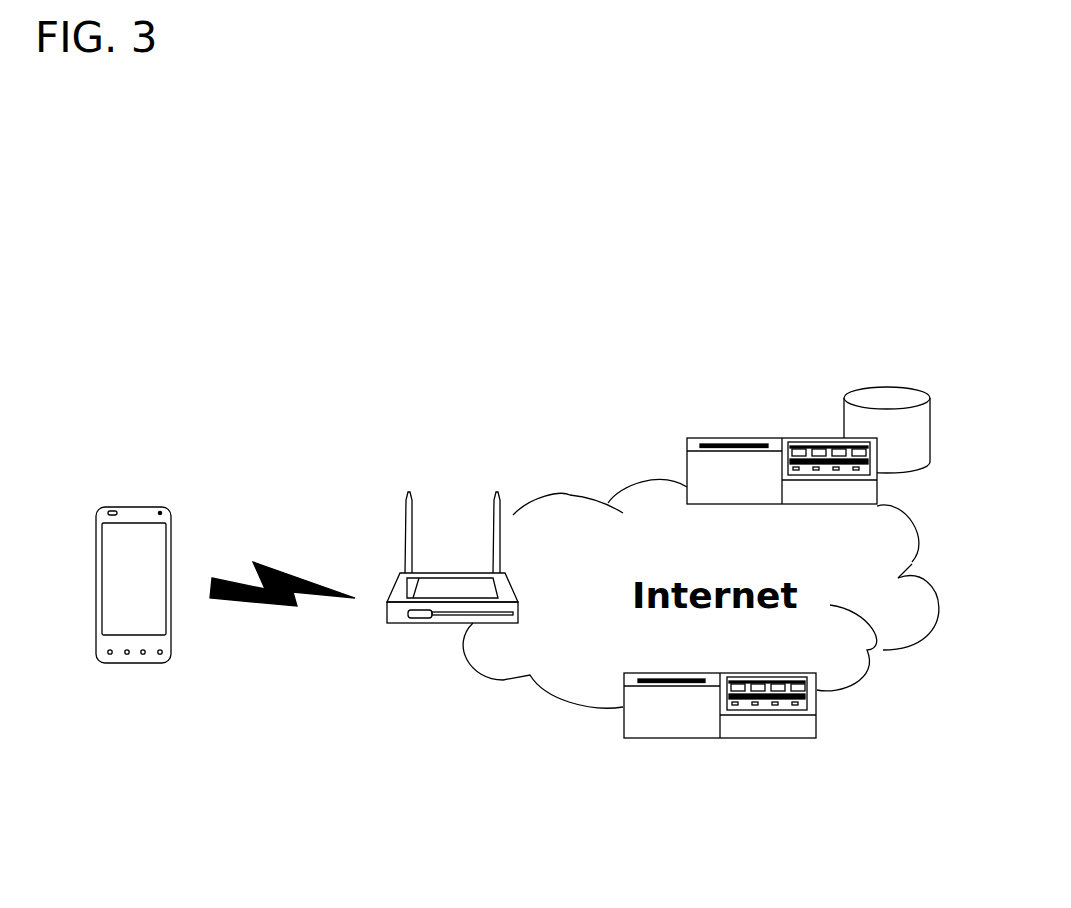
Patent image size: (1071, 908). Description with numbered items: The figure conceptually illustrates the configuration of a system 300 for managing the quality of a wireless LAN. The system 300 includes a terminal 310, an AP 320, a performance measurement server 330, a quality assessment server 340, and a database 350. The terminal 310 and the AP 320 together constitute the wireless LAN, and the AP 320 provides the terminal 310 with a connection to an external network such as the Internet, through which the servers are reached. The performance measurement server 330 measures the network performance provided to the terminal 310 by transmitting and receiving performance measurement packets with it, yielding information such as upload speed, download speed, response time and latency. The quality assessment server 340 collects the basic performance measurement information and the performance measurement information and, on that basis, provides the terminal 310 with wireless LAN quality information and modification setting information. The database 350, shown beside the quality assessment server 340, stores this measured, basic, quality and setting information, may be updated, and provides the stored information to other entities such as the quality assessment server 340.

The system for managing quality of a wireless LAN 300 is at (166, 382).
The terminal 310 is at (130, 663).
The AP 320 is at (407, 625).
The performance measurement server 330 is at (697, 738).
The quality assessment server 340 is at (730, 437).
The database 350 is at (893, 388).